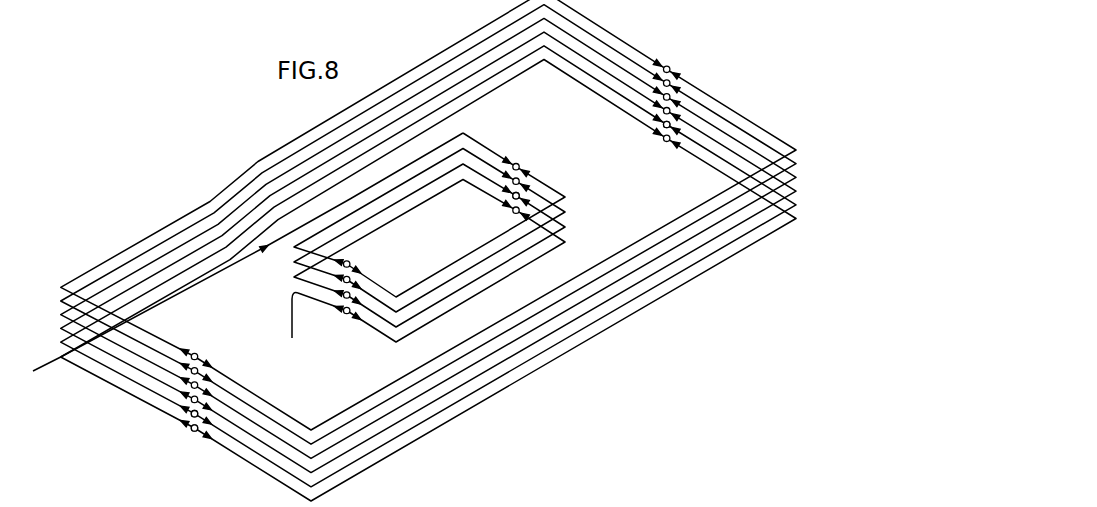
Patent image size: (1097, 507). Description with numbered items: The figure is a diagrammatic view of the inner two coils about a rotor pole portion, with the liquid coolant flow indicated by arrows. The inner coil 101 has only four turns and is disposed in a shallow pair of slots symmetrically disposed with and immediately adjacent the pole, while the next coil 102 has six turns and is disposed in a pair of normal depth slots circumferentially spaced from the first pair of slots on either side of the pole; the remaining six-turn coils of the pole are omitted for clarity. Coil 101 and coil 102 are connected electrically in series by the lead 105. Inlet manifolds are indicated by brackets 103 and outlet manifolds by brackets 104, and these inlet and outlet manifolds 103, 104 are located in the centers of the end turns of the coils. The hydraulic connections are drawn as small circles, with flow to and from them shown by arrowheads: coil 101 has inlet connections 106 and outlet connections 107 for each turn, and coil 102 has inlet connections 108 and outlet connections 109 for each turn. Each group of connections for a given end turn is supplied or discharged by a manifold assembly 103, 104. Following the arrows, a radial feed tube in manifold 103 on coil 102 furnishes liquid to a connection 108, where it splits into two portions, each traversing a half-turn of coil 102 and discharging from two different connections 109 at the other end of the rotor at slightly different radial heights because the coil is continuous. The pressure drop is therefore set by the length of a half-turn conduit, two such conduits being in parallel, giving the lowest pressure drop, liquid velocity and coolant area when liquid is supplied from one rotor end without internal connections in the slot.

The inner coil 101 is at (562, 216).
The next coil 102 is at (690, 281).
The inlet manifold 103 is at (230, 363).
The outlet manifold 104 is at (693, 77).
The lead 105 is at (334, 206).
The inlet connections 106 is at (345, 306).
The outlet connections 107 is at (512, 198).
The inlet connections 108 is at (193, 418).
The outlet connections 109 is at (662, 125).